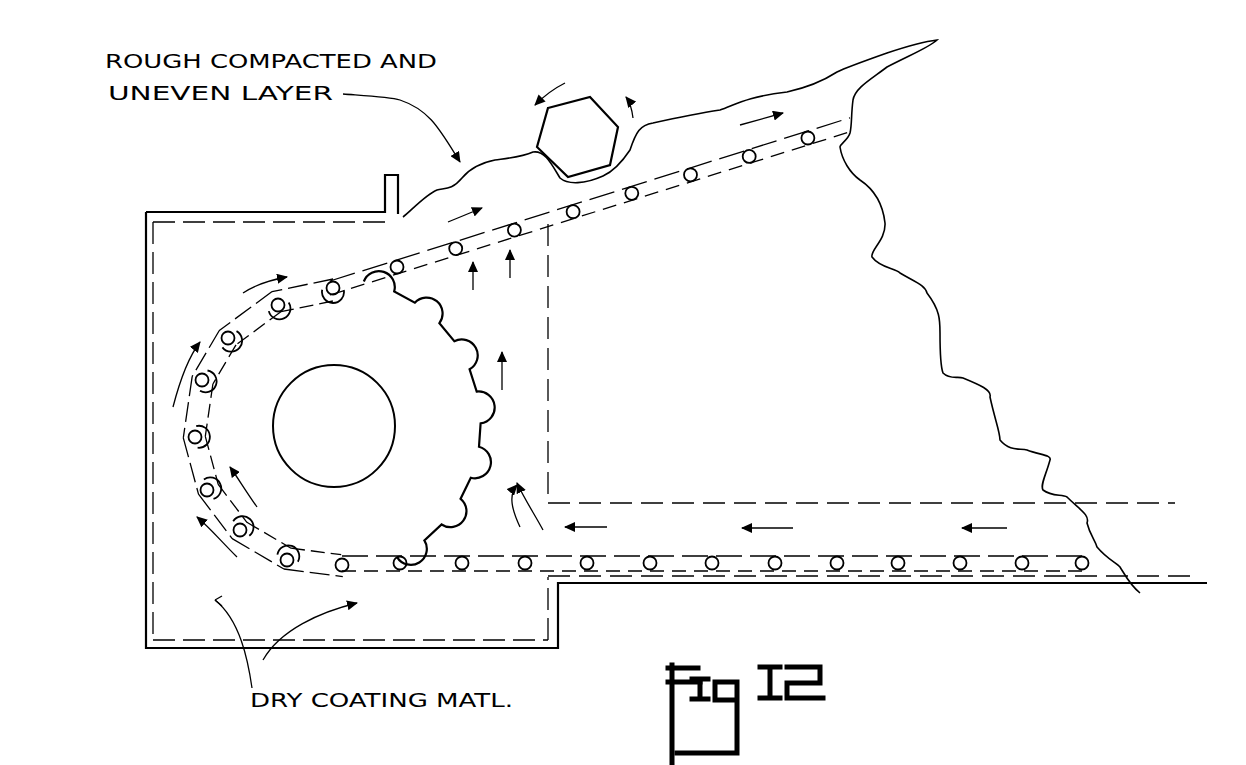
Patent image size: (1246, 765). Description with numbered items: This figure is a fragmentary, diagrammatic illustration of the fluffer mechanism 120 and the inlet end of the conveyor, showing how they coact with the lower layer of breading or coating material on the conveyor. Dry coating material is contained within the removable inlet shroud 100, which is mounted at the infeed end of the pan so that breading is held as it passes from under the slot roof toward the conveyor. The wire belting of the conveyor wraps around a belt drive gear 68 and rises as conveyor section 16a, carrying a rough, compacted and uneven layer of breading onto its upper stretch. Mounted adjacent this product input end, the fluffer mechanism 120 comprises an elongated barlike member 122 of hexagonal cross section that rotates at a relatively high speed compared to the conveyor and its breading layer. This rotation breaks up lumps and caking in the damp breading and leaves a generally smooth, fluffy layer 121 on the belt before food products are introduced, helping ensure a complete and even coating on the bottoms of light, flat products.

The inlet shroud 100 is at (317, 212).
The belt drive gear 68 is at (462, 423).
The conveyor belt section 16a is at (828, 122).
The smooth fluffy layer 121 is at (768, 97).
The elongated barlike member 122 is at (578, 107).
The fluffer mechanism 120 is at (604, 86).